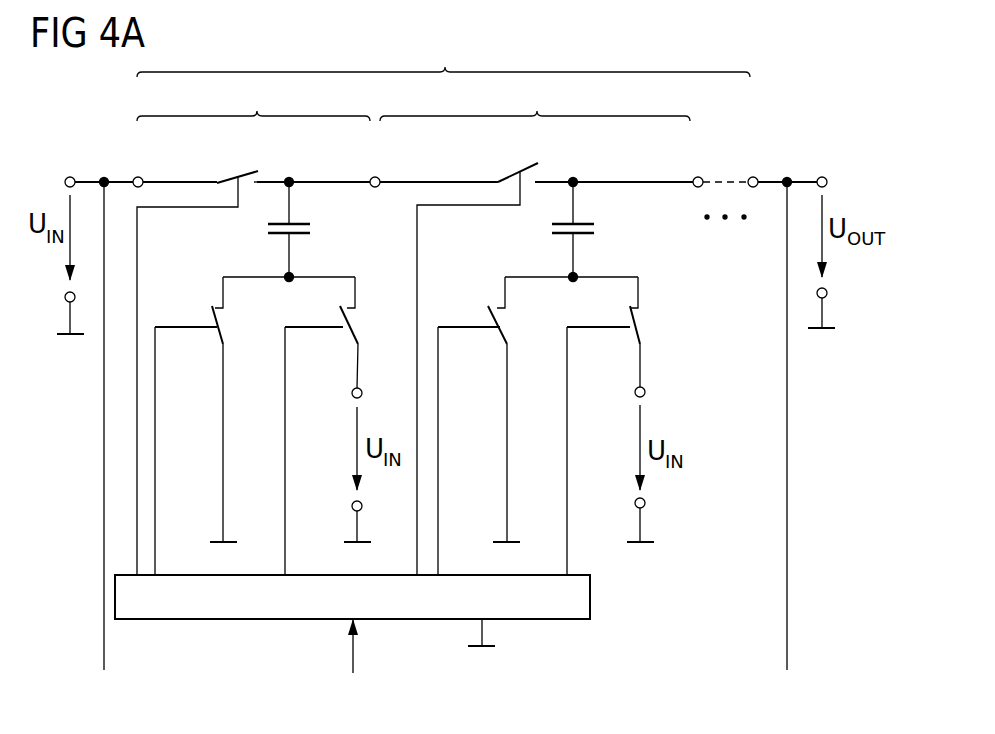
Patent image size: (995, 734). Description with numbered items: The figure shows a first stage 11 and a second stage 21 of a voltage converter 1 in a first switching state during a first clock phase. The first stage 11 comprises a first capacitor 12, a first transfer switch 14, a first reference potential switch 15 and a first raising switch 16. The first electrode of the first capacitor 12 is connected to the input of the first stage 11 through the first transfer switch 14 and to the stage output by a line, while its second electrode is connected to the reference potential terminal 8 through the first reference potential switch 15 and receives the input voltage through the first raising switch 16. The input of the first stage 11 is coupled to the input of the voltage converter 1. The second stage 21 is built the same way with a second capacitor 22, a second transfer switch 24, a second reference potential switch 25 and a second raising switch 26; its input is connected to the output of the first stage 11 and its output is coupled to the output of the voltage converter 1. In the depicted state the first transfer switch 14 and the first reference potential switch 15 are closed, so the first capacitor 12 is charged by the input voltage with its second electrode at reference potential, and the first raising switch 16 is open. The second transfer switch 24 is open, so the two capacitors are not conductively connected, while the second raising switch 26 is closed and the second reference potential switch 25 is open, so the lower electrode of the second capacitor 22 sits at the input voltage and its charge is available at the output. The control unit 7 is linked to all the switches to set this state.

The voltage converter 1 is at (443, 56).
The first stage 11 is at (253, 102).
The second stage 21 is at (535, 101).
The first transfer switch 14 is at (219, 178).
The second transfer switch 24 is at (504, 173).
The first capacitor 12 is at (313, 231).
The second capacitor 22 is at (597, 231).
The first reference potential switch 15 is at (217, 337).
The first raising switch 16 is at (347, 337).
The second reference potential switch 25 is at (500, 337).
The second raising switch 26 is at (634, 337).
The control unit 7 is at (591, 592).
The reference potential terminal 8 is at (75, 336).